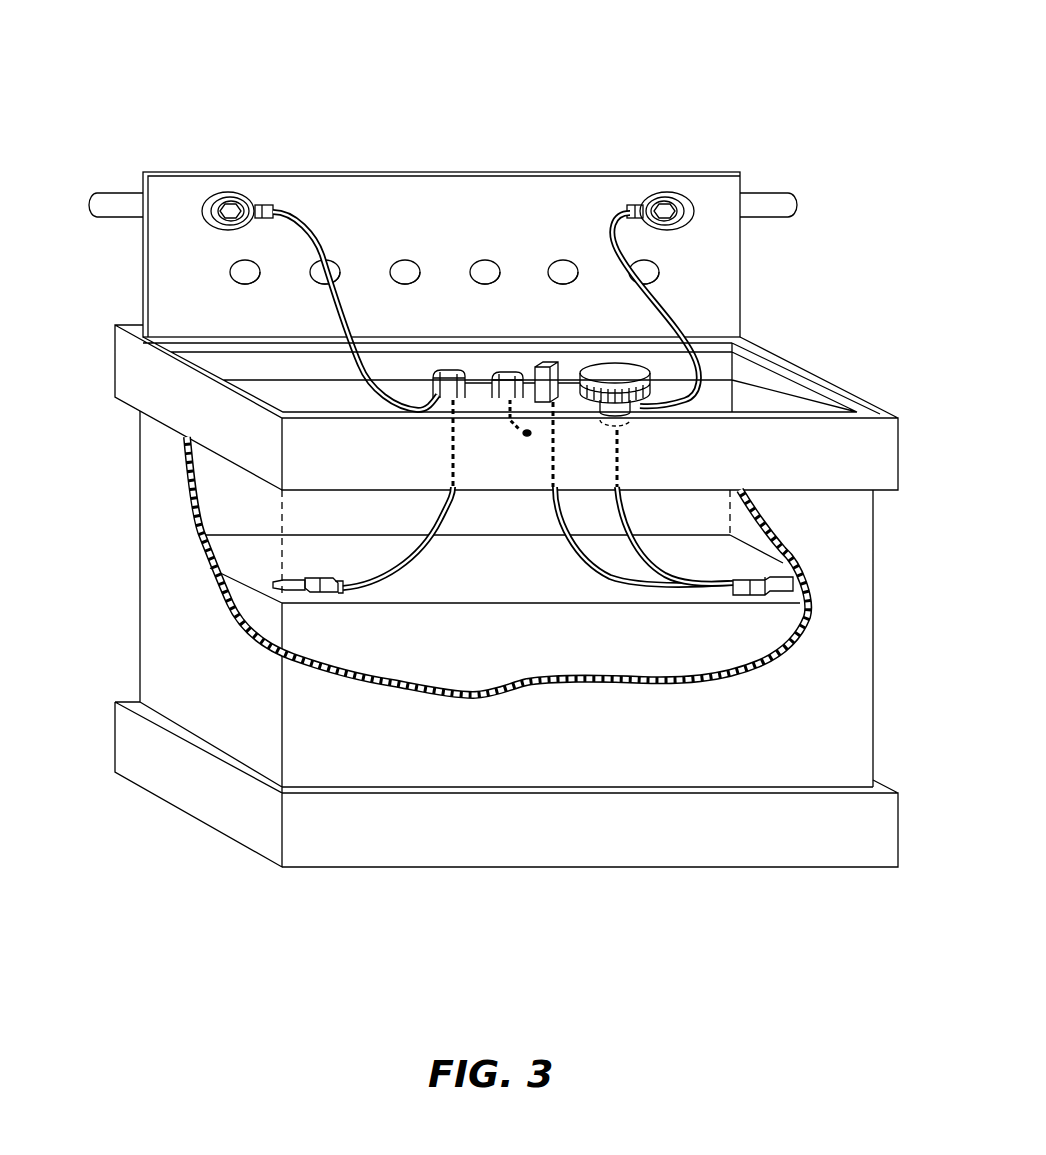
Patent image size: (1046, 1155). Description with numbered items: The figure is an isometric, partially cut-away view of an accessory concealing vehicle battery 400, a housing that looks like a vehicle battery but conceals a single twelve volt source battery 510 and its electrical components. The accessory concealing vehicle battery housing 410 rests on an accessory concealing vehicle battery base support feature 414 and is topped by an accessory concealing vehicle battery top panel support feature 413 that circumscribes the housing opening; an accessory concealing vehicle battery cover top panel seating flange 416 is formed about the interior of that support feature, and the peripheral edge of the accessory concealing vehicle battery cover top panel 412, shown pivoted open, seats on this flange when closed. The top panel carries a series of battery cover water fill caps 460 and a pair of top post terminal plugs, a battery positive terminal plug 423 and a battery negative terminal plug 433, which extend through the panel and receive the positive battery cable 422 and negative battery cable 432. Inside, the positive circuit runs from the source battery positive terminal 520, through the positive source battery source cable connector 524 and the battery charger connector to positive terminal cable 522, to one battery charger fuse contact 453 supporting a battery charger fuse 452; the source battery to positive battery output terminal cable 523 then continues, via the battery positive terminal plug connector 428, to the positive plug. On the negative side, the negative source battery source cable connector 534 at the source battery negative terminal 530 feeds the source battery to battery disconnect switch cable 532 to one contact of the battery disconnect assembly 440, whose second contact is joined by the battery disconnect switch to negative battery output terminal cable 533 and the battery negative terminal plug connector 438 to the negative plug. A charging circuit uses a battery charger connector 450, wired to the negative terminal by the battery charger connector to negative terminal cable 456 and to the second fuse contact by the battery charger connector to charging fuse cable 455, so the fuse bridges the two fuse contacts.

The accessory concealing vehicle battery 400 is at (133, 85).
The accessory concealing vehicle battery housing 410 is at (840, 728).
The accessory concealing vehicle battery cover top panel 412 is at (178, 264).
The accessory concealing vehicle battery top panel support feature 413 is at (777, 460).
The accessory concealing vehicle battery base support feature 414 is at (633, 833).
The accessory concealing vehicle battery cover top panel seating flange 416 is at (803, 387).
The positive battery cable 422 is at (130, 200).
The battery positive terminal plug 423 is at (216, 192).
The battery positive terminal plug connector 428 is at (250, 230).
The negative battery cable 432 is at (766, 205).
The battery negative terminal plug 433 is at (653, 192).
The battery negative terminal plug connector 438 is at (687, 230).
The battery disconnect assembly 440 is at (618, 372).
The battery charger connector 450 is at (550, 367).
The battery charger fuse 452 is at (478, 370).
The battery charger fuse contact 453 is at (517, 425).
The battery charger connector to charging fuse cable 455 is at (527, 438).
The battery charger connector to negative terminal cable 456 is at (553, 505).
The battery cover water fill cap 460 is at (430, 272).
The 12 volt source battery 510 is at (562, 650).
The 12 volt source battery positive terminal 520 is at (293, 578).
The battery charger connector to positive terminal cable 522 is at (437, 543).
The 12 volt source battery to positive battery output terminal cable 523 is at (322, 300).
The 12 volt positive source battery source cable connector 524 is at (333, 592).
The 12 volt source battery negative terminal 530 is at (780, 575).
The 12 volt source battery to battery disconnect switch cable 532 is at (650, 553).
The battery disconnect switch to negative battery output terminal cable 533 is at (672, 300).
The 12 volt negative source battery source cable connector 534 is at (795, 620).